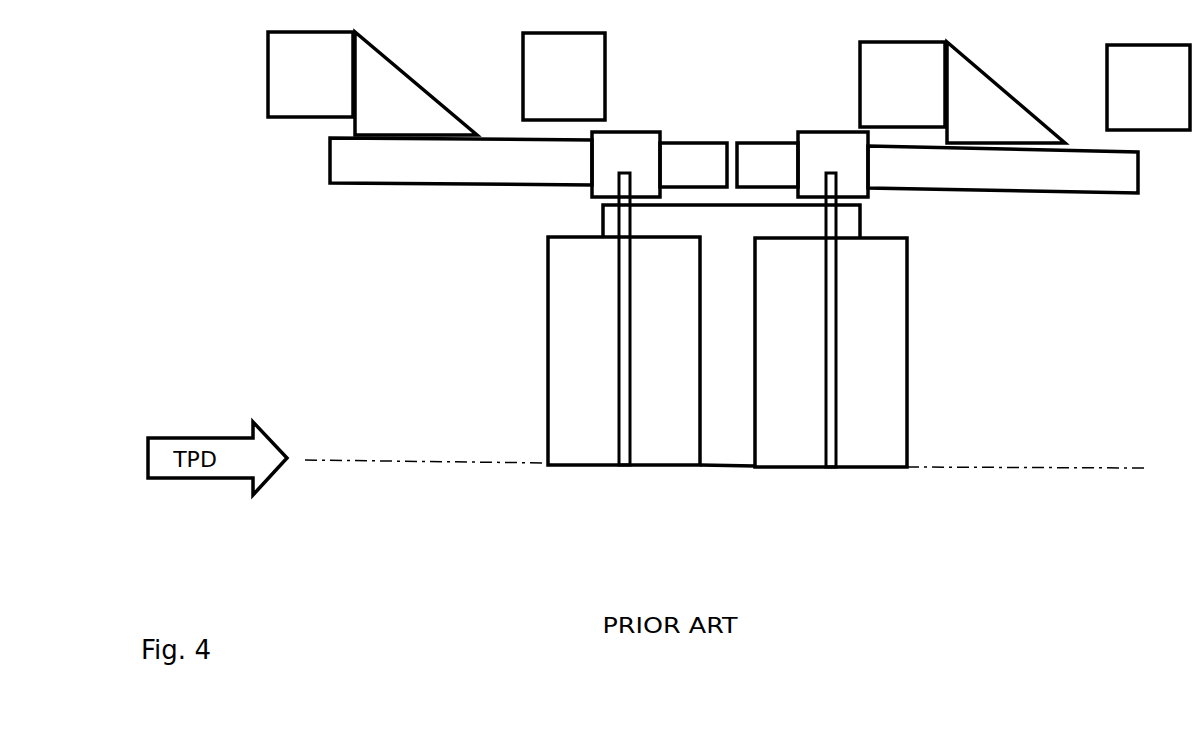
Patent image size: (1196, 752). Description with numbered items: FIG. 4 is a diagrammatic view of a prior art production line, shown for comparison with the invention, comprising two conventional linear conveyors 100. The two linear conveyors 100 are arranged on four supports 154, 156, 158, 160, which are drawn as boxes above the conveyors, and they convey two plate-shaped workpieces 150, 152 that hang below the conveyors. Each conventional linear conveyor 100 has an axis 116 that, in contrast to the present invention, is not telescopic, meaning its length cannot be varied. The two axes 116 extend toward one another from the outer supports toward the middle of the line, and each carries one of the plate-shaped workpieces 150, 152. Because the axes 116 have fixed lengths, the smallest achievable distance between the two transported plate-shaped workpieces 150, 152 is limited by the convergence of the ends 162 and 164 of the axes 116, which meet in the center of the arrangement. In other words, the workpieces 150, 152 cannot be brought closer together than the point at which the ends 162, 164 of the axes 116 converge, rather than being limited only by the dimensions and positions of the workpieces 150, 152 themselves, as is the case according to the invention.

The linear conveyor 100 is at (456, 323).
The axis 116 is at (445, 163).
The plate-shaped workpiece 150 is at (588, 442).
The plate-shaped workpiece 152 is at (878, 443).
The support 154 is at (288, 85).
The support 156 is at (542, 88).
The support 158 is at (880, 95).
The support 160 is at (1126, 98).
The end of axis 162 is at (707, 163).
The end of axis 164 is at (757, 163).